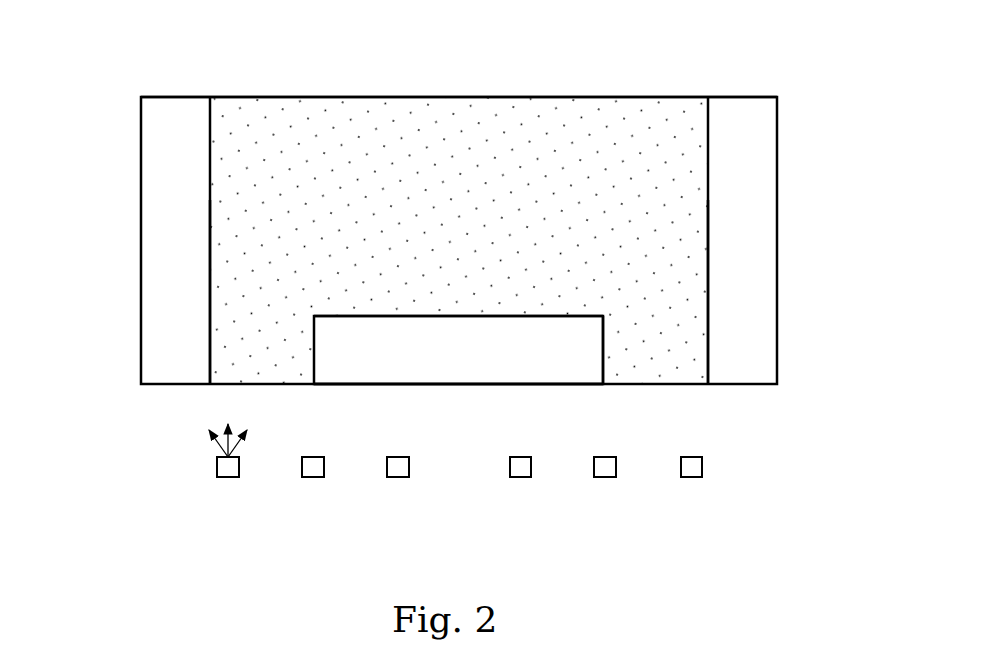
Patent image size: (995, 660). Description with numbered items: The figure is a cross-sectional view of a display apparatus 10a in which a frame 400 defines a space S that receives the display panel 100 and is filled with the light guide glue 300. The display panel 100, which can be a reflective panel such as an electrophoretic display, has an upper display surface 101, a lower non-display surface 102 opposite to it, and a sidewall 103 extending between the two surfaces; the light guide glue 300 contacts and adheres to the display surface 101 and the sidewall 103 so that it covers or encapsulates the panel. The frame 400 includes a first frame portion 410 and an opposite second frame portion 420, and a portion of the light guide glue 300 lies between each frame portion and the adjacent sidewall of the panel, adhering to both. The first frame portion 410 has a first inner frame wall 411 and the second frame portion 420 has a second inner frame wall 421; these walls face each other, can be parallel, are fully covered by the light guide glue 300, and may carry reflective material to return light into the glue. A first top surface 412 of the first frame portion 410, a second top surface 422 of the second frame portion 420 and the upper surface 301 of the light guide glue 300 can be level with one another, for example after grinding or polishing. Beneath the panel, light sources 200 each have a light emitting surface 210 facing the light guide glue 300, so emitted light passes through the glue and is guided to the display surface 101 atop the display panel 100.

The display apparatus 10a is at (79, 47).
The frame 400 is at (117, 163).
The first frame portion 410 is at (153, 242).
The first inner frame wall 411 is at (210, 290).
The first top surface 412 is at (176, 97).
The second frame portion 420 is at (767, 242).
The second inner frame wall 421 is at (708, 293).
The second top surface 422 is at (740, 97).
The light guide glue 300 is at (330, 97).
The upper surface 301 is at (428, 97).
The space S is at (250, 125).
The display panel 100 is at (482, 362).
The display surface 101 is at (481, 316).
The non-display surface 102 is at (573, 384).
The sidewall 103 is at (603, 362).
The light source 200 is at (398, 477).
The light emitting surface 210 is at (217, 466).